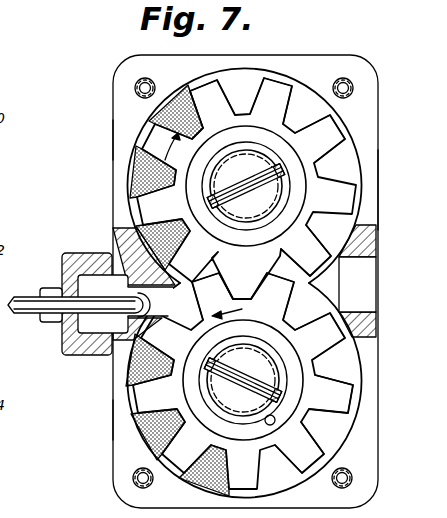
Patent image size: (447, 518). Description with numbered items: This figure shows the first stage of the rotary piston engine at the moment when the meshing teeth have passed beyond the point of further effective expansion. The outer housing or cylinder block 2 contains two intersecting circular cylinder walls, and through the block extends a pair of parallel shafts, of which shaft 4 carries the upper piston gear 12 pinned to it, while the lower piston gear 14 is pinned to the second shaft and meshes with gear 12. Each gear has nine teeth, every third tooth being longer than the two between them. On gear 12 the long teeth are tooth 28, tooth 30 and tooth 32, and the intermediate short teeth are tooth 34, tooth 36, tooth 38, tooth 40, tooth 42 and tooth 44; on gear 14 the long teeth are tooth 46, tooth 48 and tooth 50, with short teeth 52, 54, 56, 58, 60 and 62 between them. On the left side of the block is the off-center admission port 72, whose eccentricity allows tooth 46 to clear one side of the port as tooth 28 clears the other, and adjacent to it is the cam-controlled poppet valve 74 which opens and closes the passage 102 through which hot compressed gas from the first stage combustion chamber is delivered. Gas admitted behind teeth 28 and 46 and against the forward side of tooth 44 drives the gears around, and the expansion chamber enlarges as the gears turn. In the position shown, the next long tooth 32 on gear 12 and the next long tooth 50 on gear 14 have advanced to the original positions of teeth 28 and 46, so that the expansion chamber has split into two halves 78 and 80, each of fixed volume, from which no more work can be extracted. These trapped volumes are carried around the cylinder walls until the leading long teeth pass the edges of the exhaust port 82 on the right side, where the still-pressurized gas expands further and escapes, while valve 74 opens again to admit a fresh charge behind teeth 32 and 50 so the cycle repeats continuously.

The cylinder block 2 is at (205, 63).
The shaft 4 is at (244, 170).
The piston gear 12 is at (128, 146).
The piston gear 14 is at (145, 418).
The long tooth 28 is at (215, 90).
The long tooth 30 is at (366, 190).
The long tooth 32 is at (178, 262).
The short tooth 34 is at (290, 99).
The short tooth 36 is at (330, 148).
The short tooth 38 is at (308, 254).
The short tooth 40 is at (244, 290).
The short tooth 42 is at (150, 186).
The short tooth 44 is at (178, 130).
The long tooth 46 is at (232, 482).
The long tooth 48 is at (318, 366).
The long tooth 50 is at (162, 312).
The short tooth 52 is at (302, 455).
The short tooth 54 is at (338, 402).
The short tooth 56 is at (283, 296).
The short tooth 58 is at (214, 330).
The short tooth 60 is at (133, 353).
The short tooth 62 is at (178, 440).
The admission port 72 is at (125, 248).
The poppet valve 74 is at (80, 328).
The expansion chamber half 78 is at (134, 186).
The expansion chamber half 80 is at (143, 445).
The exhaust port 82 is at (357, 281).
The port 102 is at (92, 285).